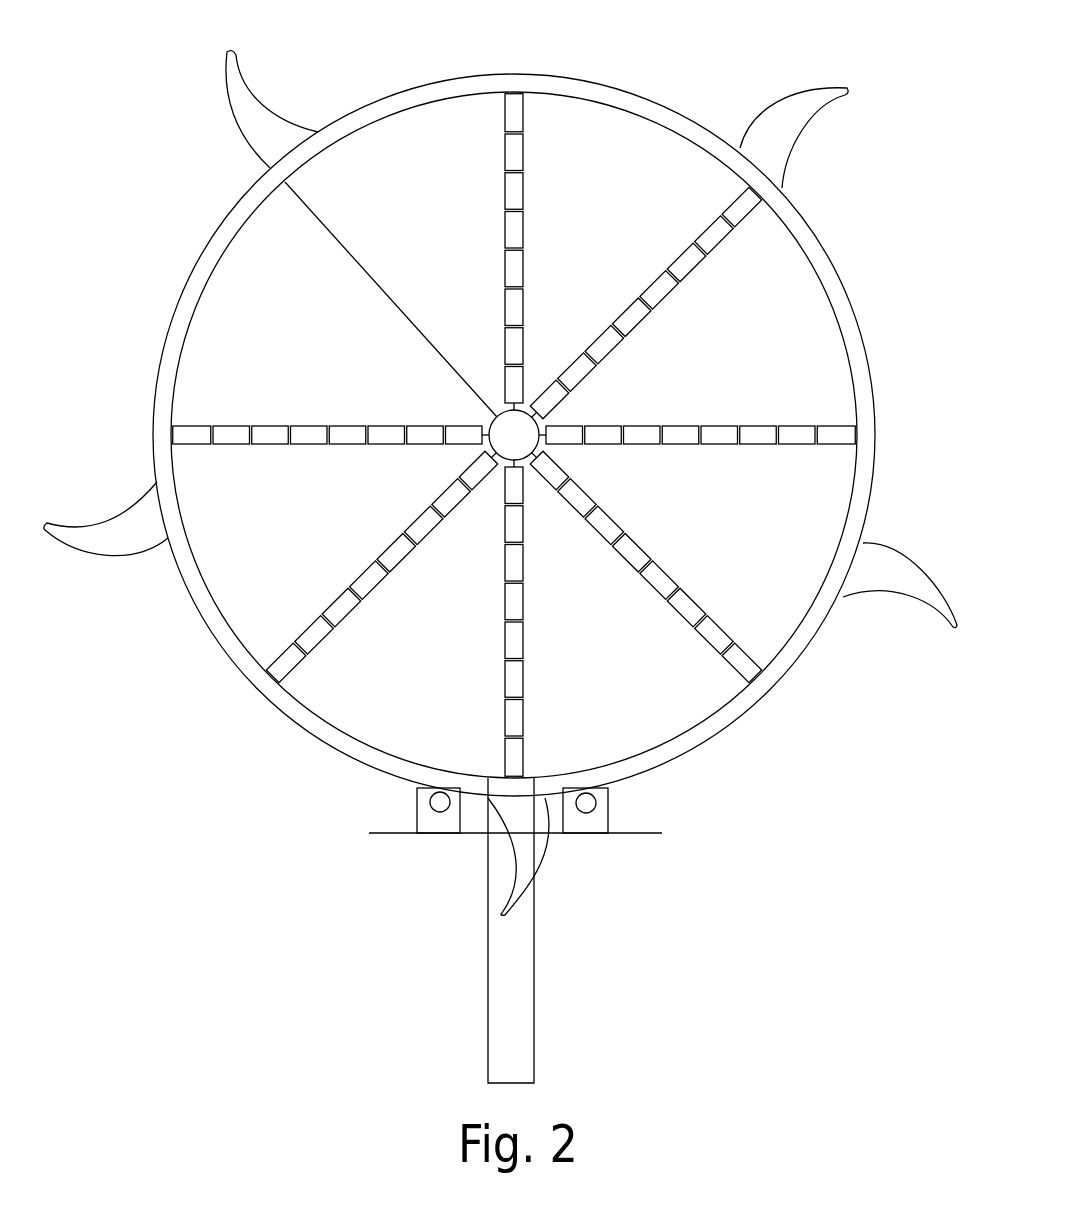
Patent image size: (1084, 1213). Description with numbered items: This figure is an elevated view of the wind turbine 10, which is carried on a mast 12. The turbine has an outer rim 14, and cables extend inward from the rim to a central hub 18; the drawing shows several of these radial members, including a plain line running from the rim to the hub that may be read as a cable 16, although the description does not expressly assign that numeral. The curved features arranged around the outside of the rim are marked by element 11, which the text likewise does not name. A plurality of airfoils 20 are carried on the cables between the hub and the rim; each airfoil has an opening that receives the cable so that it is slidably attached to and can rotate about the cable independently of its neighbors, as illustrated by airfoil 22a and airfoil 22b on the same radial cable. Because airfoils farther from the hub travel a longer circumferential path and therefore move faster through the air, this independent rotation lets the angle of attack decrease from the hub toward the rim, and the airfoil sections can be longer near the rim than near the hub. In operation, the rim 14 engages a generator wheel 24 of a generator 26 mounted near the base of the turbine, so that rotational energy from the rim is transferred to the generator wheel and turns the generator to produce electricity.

The wind turbine 10 is at (152, 190).
The blade 11 is at (763, 110).
The mast 12 is at (500, 1010).
The rim 14 is at (235, 205).
The spoke 16 is at (385, 293).
The hub 18 is at (490, 421).
The airfoils 20 is at (505, 231).
The airfoil 22a is at (505, 297).
The airfoil 22b is at (505, 345).
The generator wheel 24 is at (425, 793).
The generator 26 is at (415, 825).